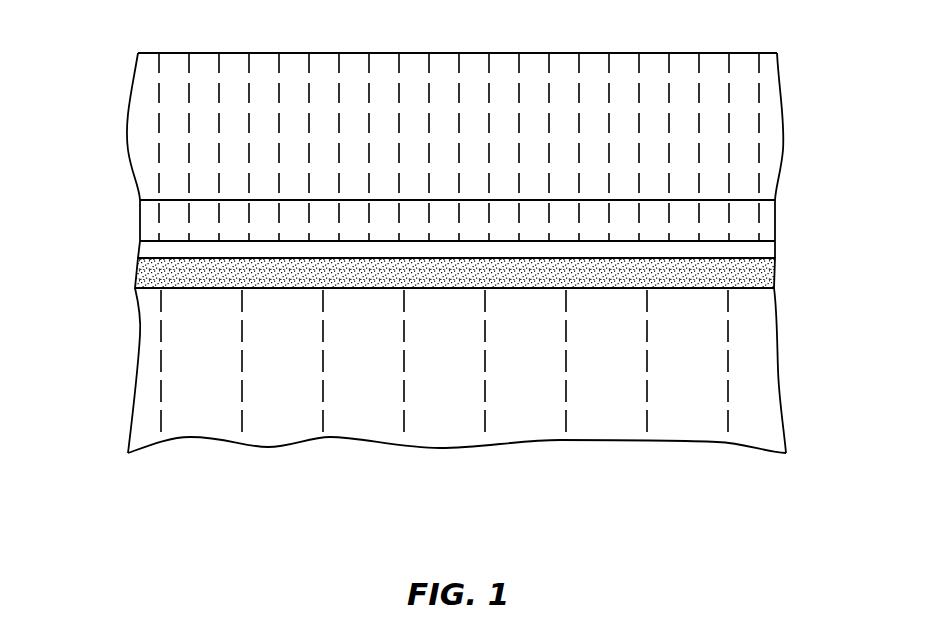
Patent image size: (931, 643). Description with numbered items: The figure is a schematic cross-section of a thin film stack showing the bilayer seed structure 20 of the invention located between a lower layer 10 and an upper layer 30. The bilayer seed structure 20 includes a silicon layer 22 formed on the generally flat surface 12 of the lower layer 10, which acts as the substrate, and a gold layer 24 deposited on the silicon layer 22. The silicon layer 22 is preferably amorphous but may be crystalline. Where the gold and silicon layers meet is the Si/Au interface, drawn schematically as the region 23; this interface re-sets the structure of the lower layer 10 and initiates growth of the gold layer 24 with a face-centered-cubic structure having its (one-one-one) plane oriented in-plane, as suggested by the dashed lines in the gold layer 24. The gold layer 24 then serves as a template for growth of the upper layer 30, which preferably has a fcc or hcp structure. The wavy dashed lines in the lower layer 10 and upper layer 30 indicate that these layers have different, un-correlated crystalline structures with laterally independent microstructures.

The lower layer 10 is at (770, 364).
The surface 12 is at (768, 281).
The bilayer seed structure 20 is at (431, 239).
The silicon layer 22 is at (427, 266).
The Si/Au interface region 23 is at (768, 248).
The gold layer 24 is at (765, 223).
The upper layer 30 is at (775, 146).